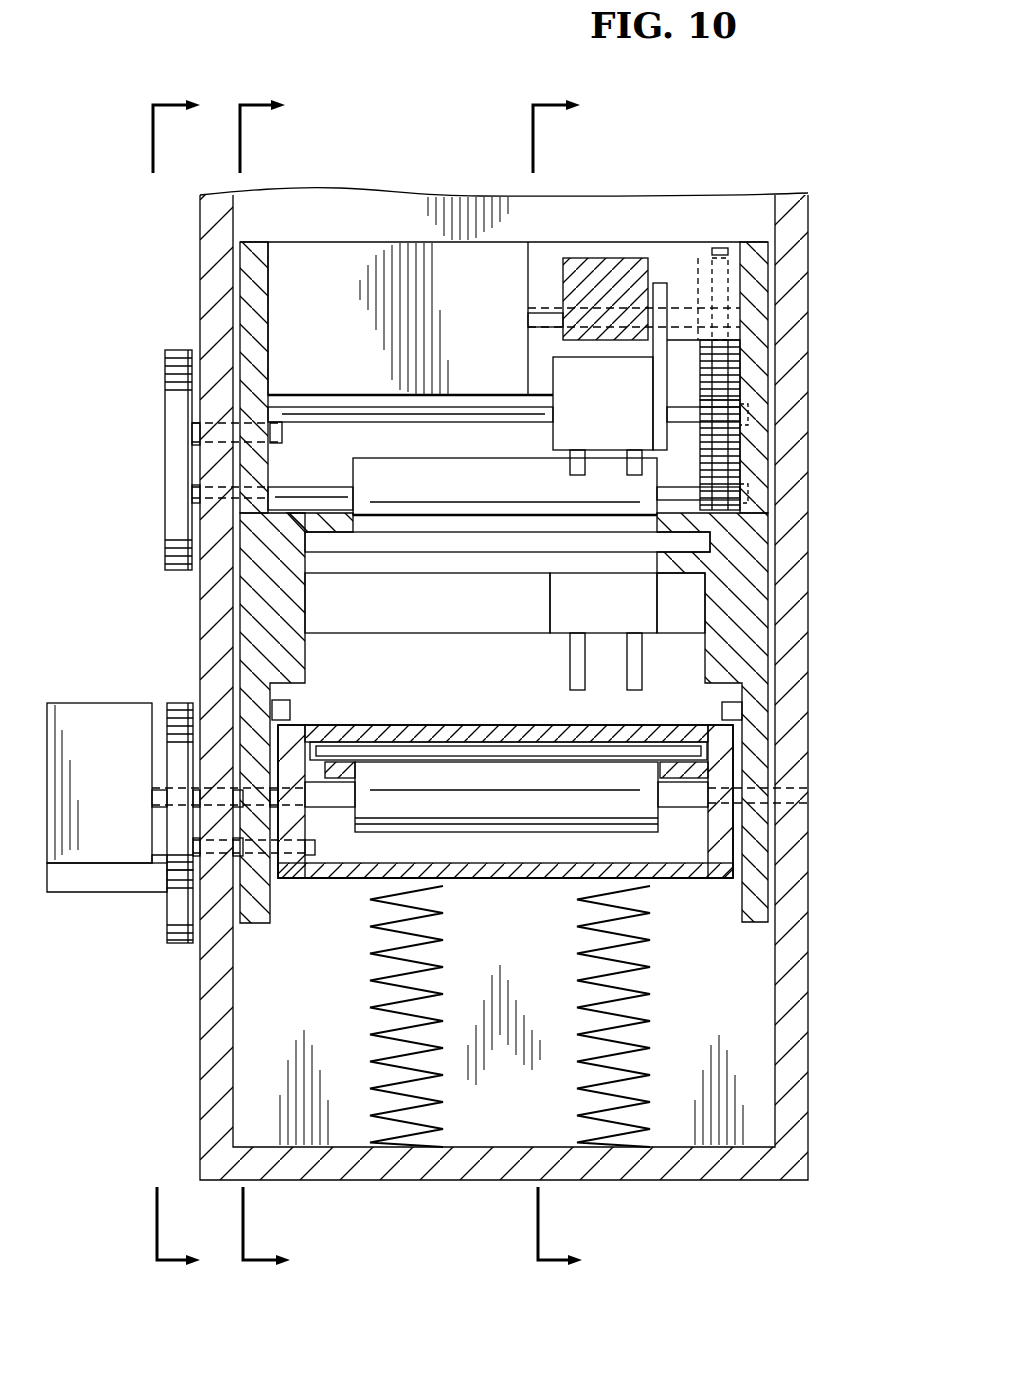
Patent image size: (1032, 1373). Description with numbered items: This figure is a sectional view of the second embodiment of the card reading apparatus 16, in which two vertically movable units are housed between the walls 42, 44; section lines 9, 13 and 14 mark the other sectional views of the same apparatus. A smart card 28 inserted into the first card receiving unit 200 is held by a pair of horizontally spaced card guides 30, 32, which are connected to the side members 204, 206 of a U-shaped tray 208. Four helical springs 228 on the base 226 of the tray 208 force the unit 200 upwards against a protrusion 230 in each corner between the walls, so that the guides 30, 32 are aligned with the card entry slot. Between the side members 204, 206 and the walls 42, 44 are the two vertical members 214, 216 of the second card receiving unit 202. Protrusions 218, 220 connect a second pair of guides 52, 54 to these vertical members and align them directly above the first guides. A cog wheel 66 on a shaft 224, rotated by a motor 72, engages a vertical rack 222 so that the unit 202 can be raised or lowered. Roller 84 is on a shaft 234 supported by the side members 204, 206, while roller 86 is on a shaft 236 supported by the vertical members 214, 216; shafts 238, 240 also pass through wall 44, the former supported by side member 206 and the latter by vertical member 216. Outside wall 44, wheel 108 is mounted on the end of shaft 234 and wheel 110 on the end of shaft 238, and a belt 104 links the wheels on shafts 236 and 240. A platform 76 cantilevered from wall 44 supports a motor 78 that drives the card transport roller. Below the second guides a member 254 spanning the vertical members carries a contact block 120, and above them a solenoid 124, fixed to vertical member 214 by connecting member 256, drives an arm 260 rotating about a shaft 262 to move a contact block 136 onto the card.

The card reading apparatus 16 is at (276, 54).
The second card receiving unit 202 is at (657, 162).
The section line 9 is at (566, 683).
The section line 13 is at (191, 683).
The section line 14 is at (280, 683).
The motor 72 is at (328, 247).
The solenoid 124 is at (600, 262).
The connecting member 256 is at (680, 262).
The shaft 224 is at (548, 312).
The vertical member 214 is at (770, 296).
The vertical member 216 is at (262, 338).
The shaft 262 is at (400, 410).
The contact block 136 is at (553, 378).
The arm 260 is at (655, 372).
The cog wheel 66 is at (720, 368).
The shaft 240 is at (215, 418).
The roller 86 is at (402, 467).
The shaft 236 is at (300, 487).
The vertical rack 222 is at (712, 430).
The belt 104 is at (178, 490).
The guide 54 is at (320, 576).
The contact block 120 is at (560, 594).
The guide 52 is at (690, 576).
The protrusion 218 is at (722, 660).
The protrusion 220 is at (305, 665).
The member 254 is at (448, 625).
The protrusion 230 is at (290, 708).
The card guide 30 is at (683, 722).
The motor 78 is at (75, 720).
The card guide 32 is at (335, 721).
The smart card 28 is at (510, 755).
The side member 206 is at (290, 750).
The wheel 108 is at (180, 770).
The shaft 238 is at (215, 840).
The roller 84 is at (520, 800).
The shaft 234 is at (688, 795).
The side member 204 is at (720, 828).
The platform 76 is at (65, 880).
The first card receiving unit 200 is at (352, 896).
The base 226 is at (495, 880).
The U-shaped tray 208 is at (678, 883).
The wheel 110 is at (185, 938).
The helical spring 228 is at (370, 1010).
The wall 44 is at (215, 1021).
The wall 42 is at (795, 1088).